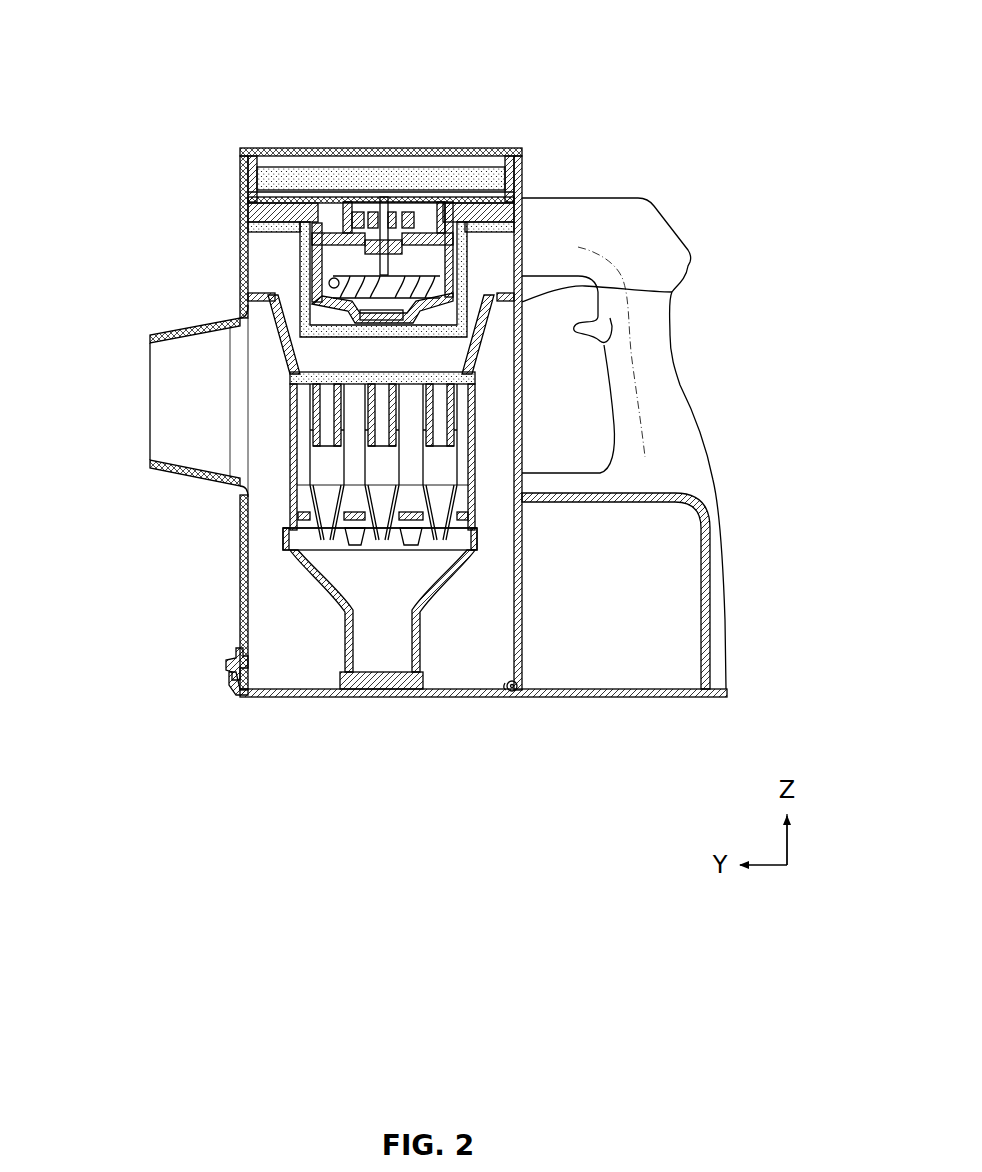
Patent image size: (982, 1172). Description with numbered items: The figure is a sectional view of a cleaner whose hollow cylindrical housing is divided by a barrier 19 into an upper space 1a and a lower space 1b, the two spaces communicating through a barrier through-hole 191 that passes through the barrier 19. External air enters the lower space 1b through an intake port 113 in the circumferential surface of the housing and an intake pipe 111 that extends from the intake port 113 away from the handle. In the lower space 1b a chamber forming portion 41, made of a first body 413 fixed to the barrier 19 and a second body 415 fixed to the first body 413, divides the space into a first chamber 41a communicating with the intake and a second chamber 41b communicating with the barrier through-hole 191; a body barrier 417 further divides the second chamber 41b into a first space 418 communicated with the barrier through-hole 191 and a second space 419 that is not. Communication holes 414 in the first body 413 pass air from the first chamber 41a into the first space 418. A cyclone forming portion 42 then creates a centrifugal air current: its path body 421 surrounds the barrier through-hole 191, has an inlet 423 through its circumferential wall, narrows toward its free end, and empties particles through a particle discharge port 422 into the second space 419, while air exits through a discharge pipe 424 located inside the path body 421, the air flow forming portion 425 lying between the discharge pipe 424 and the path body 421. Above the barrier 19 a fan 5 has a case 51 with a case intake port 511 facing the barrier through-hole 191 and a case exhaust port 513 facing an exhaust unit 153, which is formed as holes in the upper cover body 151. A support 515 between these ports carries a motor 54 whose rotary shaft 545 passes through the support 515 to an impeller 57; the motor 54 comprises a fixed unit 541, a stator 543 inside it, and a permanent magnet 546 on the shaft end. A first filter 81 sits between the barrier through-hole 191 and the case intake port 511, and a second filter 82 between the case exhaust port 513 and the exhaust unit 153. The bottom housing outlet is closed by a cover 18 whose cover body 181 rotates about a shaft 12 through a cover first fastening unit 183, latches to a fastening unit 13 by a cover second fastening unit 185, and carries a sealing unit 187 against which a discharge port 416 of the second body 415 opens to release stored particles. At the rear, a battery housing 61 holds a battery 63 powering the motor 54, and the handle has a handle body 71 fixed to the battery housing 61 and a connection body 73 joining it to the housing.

The motor 54 is at (432, 137).
The exhaust unit 153 is at (273, 148).
The case exhaust port 513 is at (333, 210).
The upper cover body 151 is at (338, 156).
The rotary shaft 545 is at (360, 212).
The permanent magnet 546 is at (378, 207).
The stator 543 is at (398, 212).
The fixed unit 541 is at (420, 228).
The case intake port 511 is at (450, 169).
The impeller 57 is at (470, 236).
The first filter 81 is at (523, 262).
The connection body 73 is at (608, 215).
The second filter 82 is at (258, 178).
The case 51 is at (258, 210).
The support 515 is at (330, 237).
The fan 5 is at (350, 258).
The upper space 1a is at (270, 286).
The intake pipe 111 is at (182, 331).
The intake port 113 is at (308, 395).
The inlet 423 is at (312, 412).
The air flow forming portion 425 is at (312, 430).
The discharge pipe 424 is at (312, 447).
The cyclone forming portion 42 is at (248, 562).
The path body 421 is at (305, 470).
The particle discharge port 422 is at (302, 506).
The first chamber 41a is at (271, 504).
The lower space 1b is at (70, 543).
The first space 418 is at (290, 555).
The second chamber 41b is at (279, 619).
The second space 419 is at (305, 580).
The cover second fastening unit 185 is at (232, 663).
The fastening unit 13 is at (234, 680).
The barrier 19 is at (672, 292).
The handle body 71 is at (647, 330).
The barrier through-hole 191 is at (560, 374).
The first body 413 is at (475, 410).
The communication holes 414 is at (475, 427).
The body barrier 417 is at (407, 517).
The second body 415 is at (470, 553).
The chamber forming portion 41 is at (466, 528).
The battery housing 61 is at (708, 607).
The battery 63 is at (615, 657).
The shaft 12 is at (514, 692).
The cover first fastening unit 183 is at (497, 733).
The cover body 181 is at (458, 697).
The sealing unit 187 is at (417, 697).
The discharge port 416 is at (387, 690).
The cover 18 is at (483, 760).